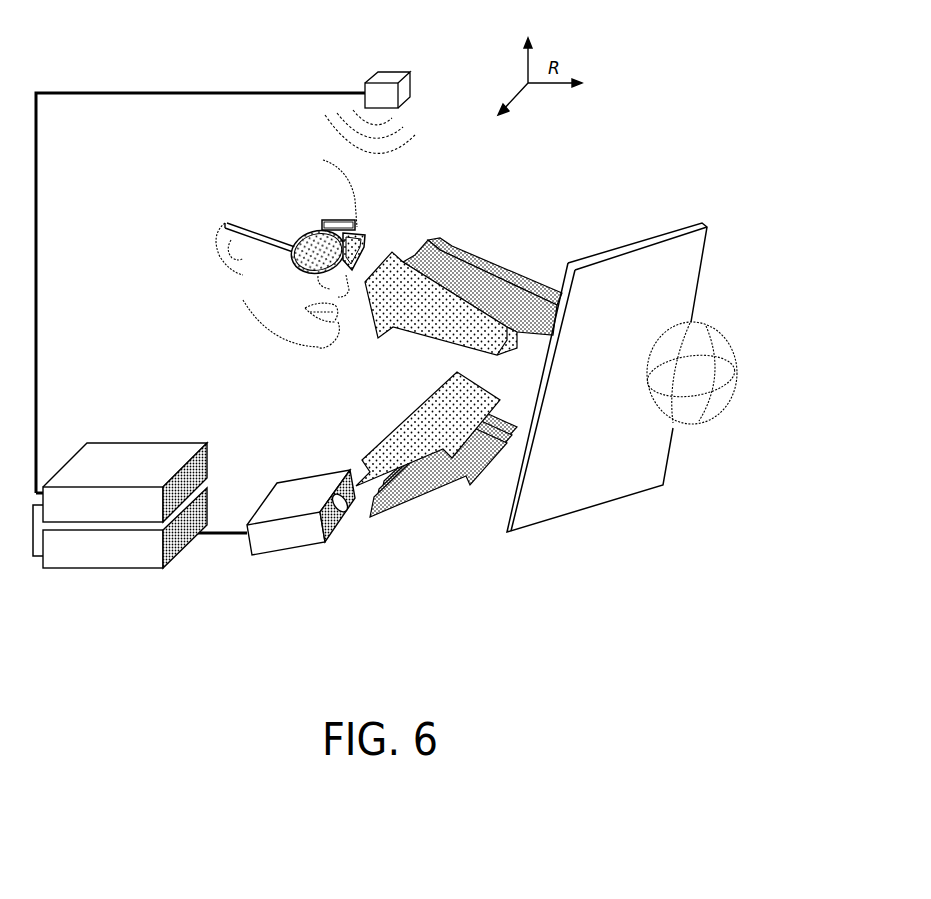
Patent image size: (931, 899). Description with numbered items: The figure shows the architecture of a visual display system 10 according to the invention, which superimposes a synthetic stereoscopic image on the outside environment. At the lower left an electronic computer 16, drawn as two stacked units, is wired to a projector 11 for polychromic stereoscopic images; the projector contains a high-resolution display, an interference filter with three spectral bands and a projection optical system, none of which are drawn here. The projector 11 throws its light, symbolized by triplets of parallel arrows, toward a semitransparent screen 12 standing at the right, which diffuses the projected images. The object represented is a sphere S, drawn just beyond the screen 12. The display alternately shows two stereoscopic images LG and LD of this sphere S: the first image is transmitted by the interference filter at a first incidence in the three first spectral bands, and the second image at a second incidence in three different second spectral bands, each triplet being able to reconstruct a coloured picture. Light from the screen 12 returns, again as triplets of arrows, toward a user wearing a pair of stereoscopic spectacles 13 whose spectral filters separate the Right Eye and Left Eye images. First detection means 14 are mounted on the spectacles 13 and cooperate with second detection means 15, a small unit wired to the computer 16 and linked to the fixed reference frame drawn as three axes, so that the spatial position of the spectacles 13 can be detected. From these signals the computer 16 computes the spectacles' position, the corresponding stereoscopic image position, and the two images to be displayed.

The visual display system 10 is at (653, 177).
The projector 11 is at (285, 542).
The semitransparent screen 12 is at (572, 502).
The pair of stereoscopic spectacles 13 is at (295, 219).
The first detection means 14 is at (333, 218).
The second detection means 15 is at (388, 80).
The electronic computer 16 is at (75, 563).
The sphere S is at (710, 407).
The stereoscopic image LD is at (428, 432).
The stereoscopic image LG is at (432, 492).